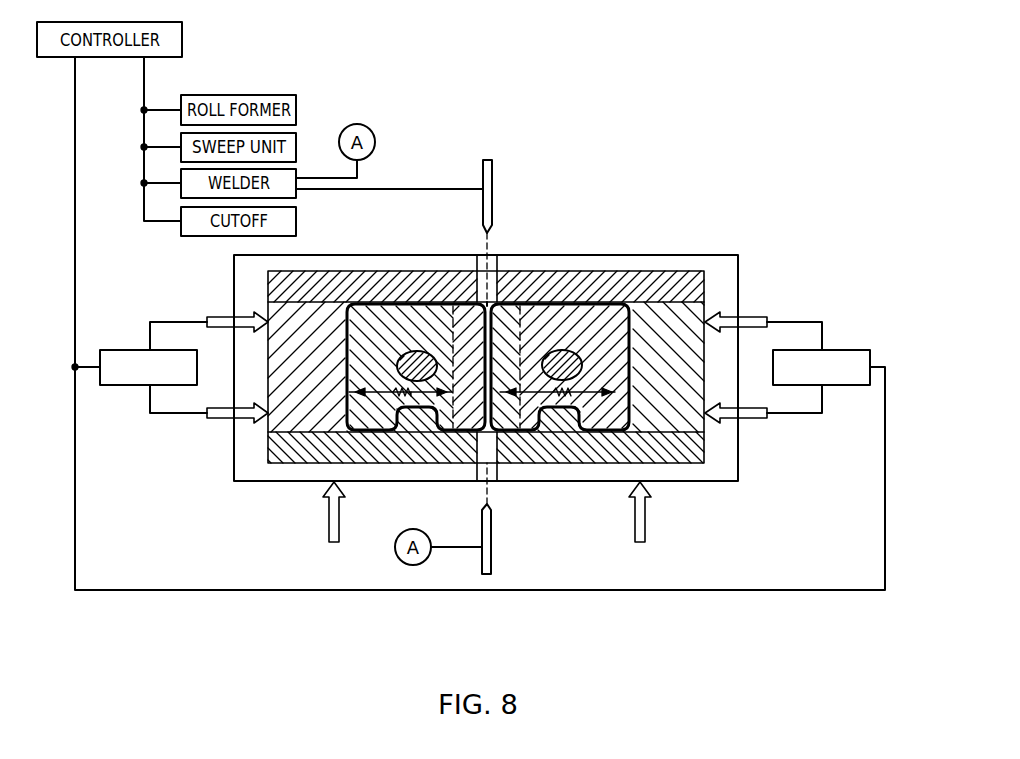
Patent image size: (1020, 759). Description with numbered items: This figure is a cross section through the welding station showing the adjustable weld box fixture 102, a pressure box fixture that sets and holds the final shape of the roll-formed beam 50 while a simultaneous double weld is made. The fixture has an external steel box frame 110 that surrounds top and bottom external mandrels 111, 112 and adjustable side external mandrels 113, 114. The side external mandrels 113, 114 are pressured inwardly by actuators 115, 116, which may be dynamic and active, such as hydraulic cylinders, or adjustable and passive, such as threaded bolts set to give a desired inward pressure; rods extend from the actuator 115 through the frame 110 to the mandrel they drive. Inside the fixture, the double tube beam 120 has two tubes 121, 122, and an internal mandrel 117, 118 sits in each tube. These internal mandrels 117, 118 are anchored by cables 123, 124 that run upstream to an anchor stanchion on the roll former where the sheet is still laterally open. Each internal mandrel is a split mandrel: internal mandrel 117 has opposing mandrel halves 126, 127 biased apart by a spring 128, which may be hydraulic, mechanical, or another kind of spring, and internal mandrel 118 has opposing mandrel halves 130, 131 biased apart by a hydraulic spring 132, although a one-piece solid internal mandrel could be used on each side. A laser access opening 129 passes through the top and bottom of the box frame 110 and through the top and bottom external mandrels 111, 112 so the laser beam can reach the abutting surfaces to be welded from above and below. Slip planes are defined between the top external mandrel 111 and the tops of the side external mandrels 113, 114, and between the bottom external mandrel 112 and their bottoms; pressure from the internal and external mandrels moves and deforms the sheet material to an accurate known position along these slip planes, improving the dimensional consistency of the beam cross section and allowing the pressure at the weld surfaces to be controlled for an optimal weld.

The adjustable weld box fixture 102 is at (724, 213).
The external steel box frame 110 is at (738, 256).
The top external mandrel 111 is at (700, 283).
The bottom external mandrel 112 is at (553, 452).
The adjustable side external mandrel 113 is at (303, 415).
The adjustable side external mandrel 114 is at (680, 415).
The actuator 115 is at (125, 350).
The actuator 116 is at (852, 350).
The internal mandrel 117 is at (368, 320).
The internal mandrel 118 is at (636, 300).
The double tube beam 120 is at (538, 298).
The tube 121 is at (423, 360).
The tube 122 is at (563, 300).
The cable 123 is at (427, 323).
The cable 124 is at (568, 363).
The mandrel half 126 is at (387, 322).
The mandrel half 127 is at (472, 325).
The spring 128 is at (378, 393).
The laser access opening 129 is at (492, 470).
The mandrel half 130 is at (503, 317).
The mandrel half 131 is at (623, 308).
The hydraulic spring 132 is at (600, 393).
The beam 50 is at (597, 303).